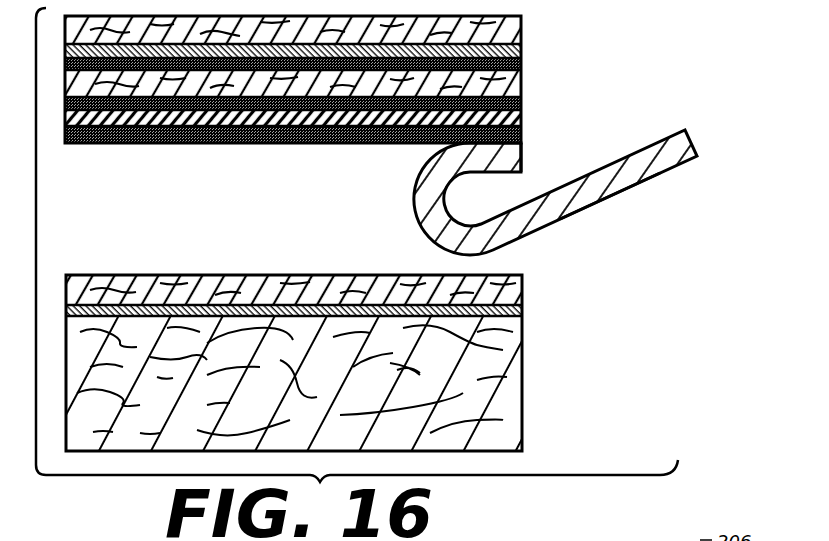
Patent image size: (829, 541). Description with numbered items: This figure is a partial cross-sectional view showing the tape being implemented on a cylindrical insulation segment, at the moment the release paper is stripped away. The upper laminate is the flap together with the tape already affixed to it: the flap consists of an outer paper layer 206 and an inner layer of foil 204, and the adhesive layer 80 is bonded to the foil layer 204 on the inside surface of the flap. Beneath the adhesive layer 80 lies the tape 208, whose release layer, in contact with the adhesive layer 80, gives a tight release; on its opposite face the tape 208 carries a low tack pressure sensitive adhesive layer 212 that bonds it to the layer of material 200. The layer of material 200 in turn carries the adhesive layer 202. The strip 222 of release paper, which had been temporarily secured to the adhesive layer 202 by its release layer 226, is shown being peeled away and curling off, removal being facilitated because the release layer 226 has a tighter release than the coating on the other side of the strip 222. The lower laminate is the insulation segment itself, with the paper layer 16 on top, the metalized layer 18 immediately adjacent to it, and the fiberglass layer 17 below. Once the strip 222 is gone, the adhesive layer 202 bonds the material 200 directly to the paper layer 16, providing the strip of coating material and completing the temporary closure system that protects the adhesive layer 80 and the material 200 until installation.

The outer paper layer 206 is at (521, 28).
The inner layer of foil 204 is at (521, 48).
The adhesive layer 80 is at (521, 63).
The tape 208 is at (521, 85).
The adhesive layer 212 is at (521, 105).
The layer of material 200 is at (521, 122).
The adhesive layer 202 is at (521, 136).
The strip of release paper 222 is at (698, 140).
The release layer 226 is at (607, 197).
The paper layer 16 is at (522, 285).
The metalized layer 18 is at (522, 311).
The fiberglass layer 17 is at (510, 388).